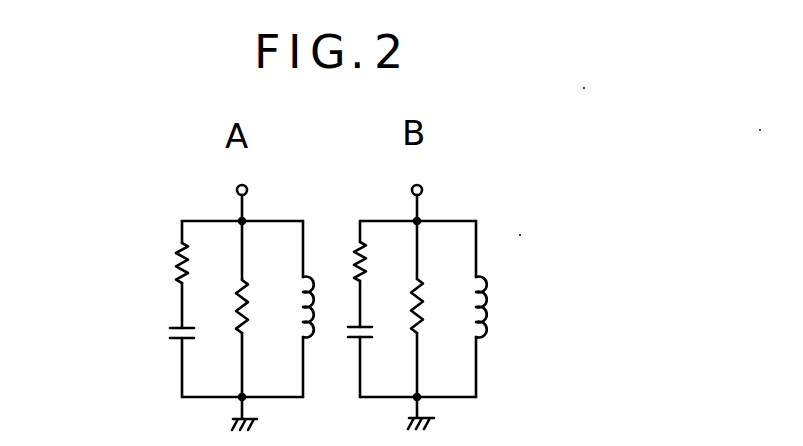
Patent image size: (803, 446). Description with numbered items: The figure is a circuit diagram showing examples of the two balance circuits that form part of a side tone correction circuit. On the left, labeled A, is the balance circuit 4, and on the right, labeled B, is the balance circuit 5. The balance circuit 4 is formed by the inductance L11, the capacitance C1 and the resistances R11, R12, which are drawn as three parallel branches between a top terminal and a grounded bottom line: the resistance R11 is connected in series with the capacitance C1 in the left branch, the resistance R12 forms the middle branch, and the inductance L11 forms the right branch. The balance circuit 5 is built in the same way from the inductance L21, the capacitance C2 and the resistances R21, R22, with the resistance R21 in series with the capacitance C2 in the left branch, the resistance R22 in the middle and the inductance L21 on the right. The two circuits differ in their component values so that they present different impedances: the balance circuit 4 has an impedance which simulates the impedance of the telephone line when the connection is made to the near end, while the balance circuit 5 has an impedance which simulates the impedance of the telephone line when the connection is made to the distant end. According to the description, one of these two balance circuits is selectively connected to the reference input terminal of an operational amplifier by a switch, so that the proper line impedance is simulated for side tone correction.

The balance circuit 4 is at (186, 307).
The balance circuit 5 is at (469, 294).
The resistance R11 is at (161, 262).
The resistance R12 is at (220, 306).
The capacitance C1 is at (167, 334).
The inductance L11 is at (284, 307).
The resistance R21 is at (339, 261).
The resistance R22 is at (396, 306).
The capacitance C2 is at (345, 336).
The inductance L21 is at (459, 307).